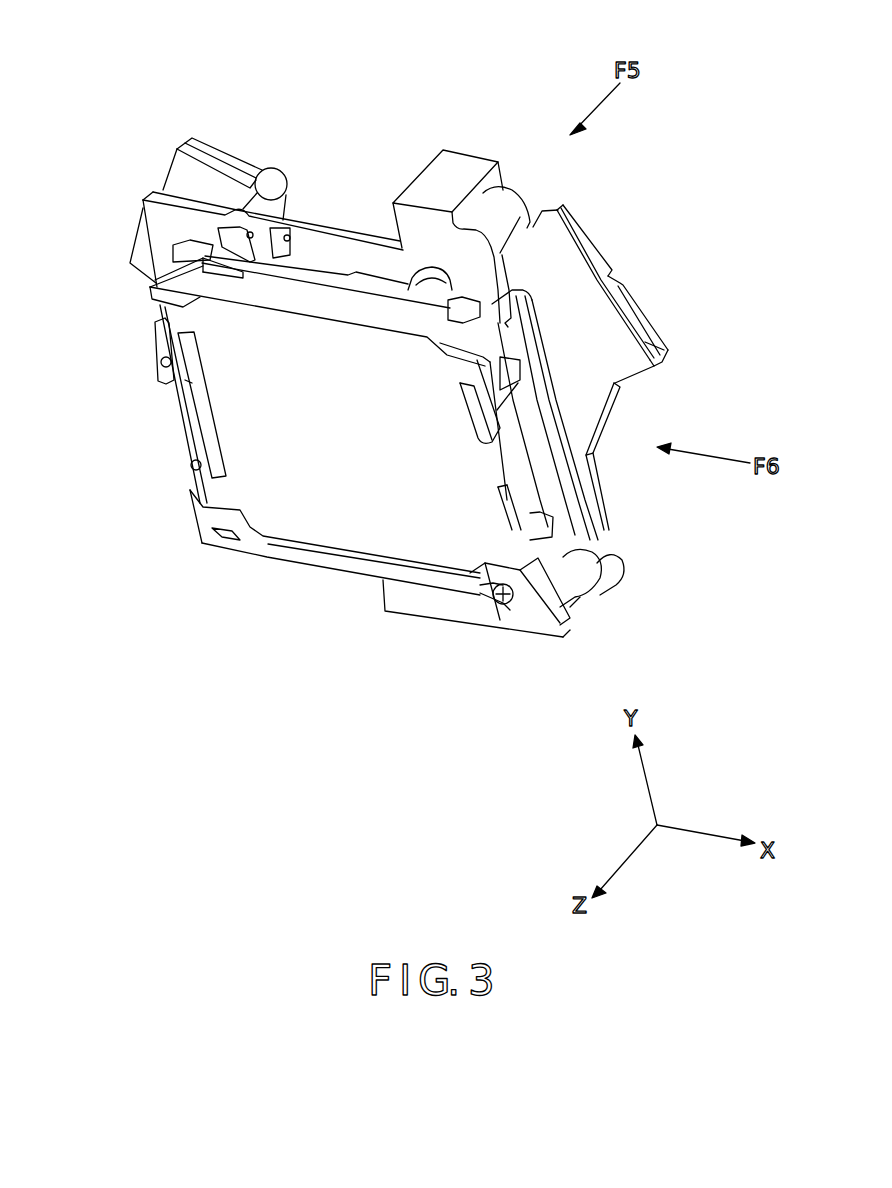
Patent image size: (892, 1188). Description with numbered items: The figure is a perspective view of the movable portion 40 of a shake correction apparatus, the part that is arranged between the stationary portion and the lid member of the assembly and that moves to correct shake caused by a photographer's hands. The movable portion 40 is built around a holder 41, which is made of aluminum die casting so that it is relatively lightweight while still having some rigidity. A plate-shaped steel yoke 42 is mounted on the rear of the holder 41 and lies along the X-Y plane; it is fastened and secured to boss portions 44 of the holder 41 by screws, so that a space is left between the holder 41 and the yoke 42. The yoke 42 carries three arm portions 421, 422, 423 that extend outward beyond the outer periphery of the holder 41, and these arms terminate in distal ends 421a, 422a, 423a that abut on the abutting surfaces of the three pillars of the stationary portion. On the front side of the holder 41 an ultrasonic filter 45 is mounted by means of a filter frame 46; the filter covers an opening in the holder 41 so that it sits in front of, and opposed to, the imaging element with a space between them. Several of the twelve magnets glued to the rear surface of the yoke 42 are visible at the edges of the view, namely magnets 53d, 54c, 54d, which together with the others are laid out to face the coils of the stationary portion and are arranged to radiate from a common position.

The movable portion 40 is at (397, 365).
The holder 41 is at (153, 192).
The yoke 42 is at (615, 387).
The boss portions 44 is at (263, 174).
The ultrasonic filter 45 is at (297, 513).
The filter frame 46 is at (348, 562).
The magnet 53d is at (192, 137).
The magnet 54c is at (600, 252).
The magnet 54d is at (633, 297).
The arm portion 421 is at (476, 647).
The distal end 421a is at (532, 637).
The arm portion 422 is at (200, 125).
The distal end 422a is at (134, 241).
The arm portion 423 is at (654, 294).
The distal end 423a is at (652, 345).